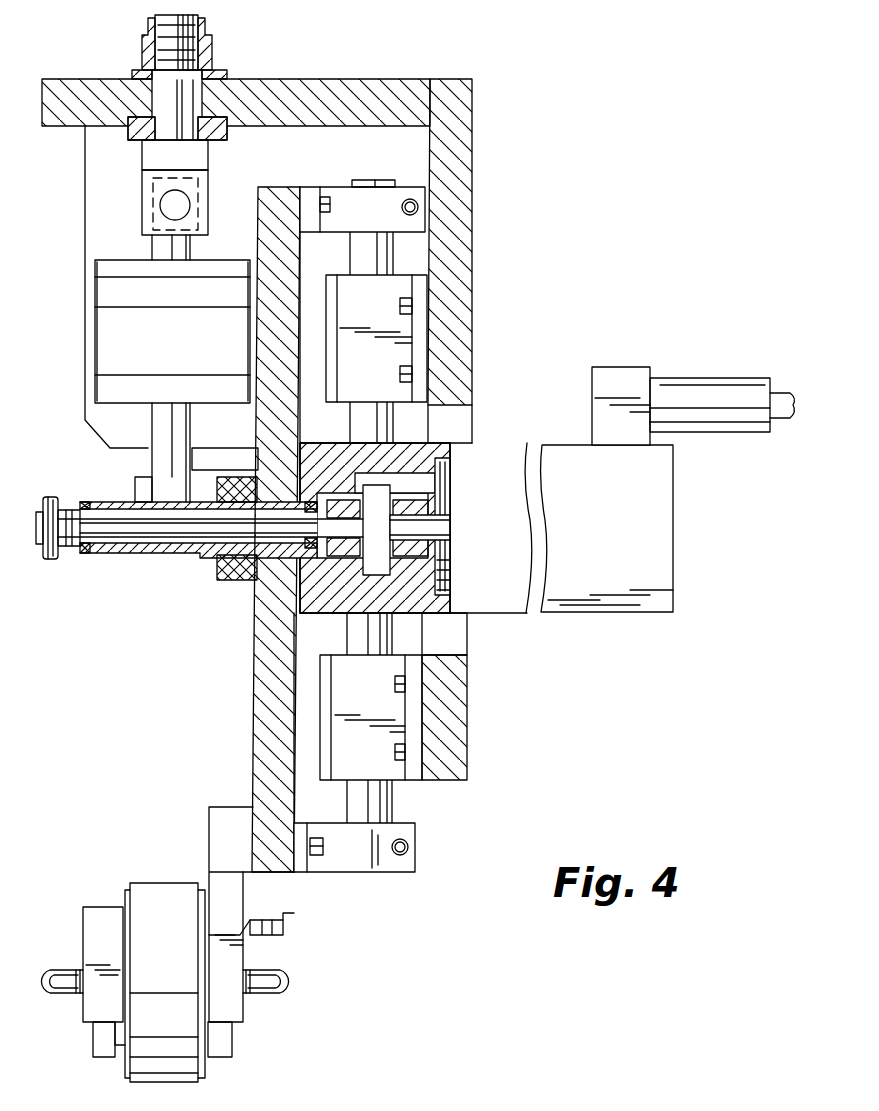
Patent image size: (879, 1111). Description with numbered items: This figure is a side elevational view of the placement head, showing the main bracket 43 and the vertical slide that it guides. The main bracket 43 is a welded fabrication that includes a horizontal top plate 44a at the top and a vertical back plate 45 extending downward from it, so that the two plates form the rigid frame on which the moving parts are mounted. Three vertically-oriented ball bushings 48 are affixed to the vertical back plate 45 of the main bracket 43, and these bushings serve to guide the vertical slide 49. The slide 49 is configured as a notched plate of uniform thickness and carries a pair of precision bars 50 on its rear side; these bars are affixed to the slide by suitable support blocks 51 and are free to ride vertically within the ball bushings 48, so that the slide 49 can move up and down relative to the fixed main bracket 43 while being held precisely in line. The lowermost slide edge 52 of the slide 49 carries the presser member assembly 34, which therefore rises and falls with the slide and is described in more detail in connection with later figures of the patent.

The main bracket 43 is at (474, 78).
The vertical back plate 45 is at (473, 140).
The horizontal top plate 44a is at (260, 127).
The support blocks 51 is at (417, 187).
The ball bushings 48 is at (343, 275).
The vertical slide 49 is at (254, 698).
The precision bars 50 is at (392, 810).
The lowermost slide edge 52 is at (280, 875).
The presser member assembly 34 is at (110, 906).